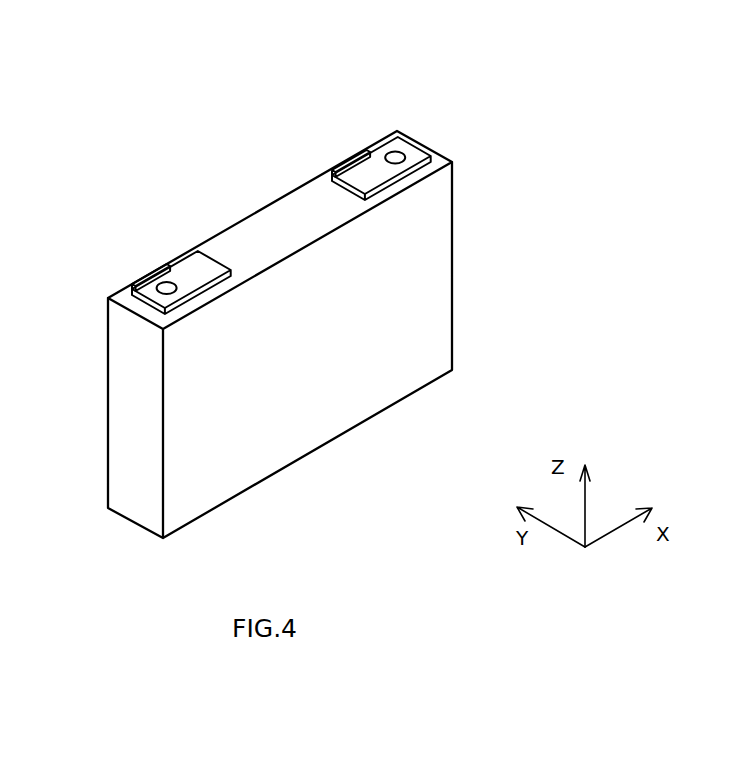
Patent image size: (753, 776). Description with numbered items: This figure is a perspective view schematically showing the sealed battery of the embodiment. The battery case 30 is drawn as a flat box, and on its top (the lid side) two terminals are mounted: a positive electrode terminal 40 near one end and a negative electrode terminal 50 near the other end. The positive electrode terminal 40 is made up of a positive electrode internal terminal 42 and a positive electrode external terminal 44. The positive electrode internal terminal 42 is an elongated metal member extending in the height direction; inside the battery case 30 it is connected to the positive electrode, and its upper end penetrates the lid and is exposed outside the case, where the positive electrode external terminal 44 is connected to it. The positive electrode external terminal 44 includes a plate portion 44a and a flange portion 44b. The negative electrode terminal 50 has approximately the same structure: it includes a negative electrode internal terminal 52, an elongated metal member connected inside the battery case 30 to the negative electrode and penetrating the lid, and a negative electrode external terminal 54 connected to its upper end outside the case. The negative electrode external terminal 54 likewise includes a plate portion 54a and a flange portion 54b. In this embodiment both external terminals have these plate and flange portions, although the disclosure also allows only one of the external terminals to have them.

The battery case 30 is at (225, 478).
The positive electrode terminal 40 is at (168, 150).
The positive electrode internal terminal 42 is at (150, 272).
The positive electrode external terminal 44 is at (202, 194).
The plate portion 44a is at (195, 273).
The flange portion 44b is at (158, 287).
The negative electrode terminal 50 is at (417, 43).
The negative electrode internal terminal 52 is at (397, 156).
The negative electrode external terminal 54 is at (367, 88).
The plate portion 54a is at (363, 173).
The flange portion 54b is at (365, 148).